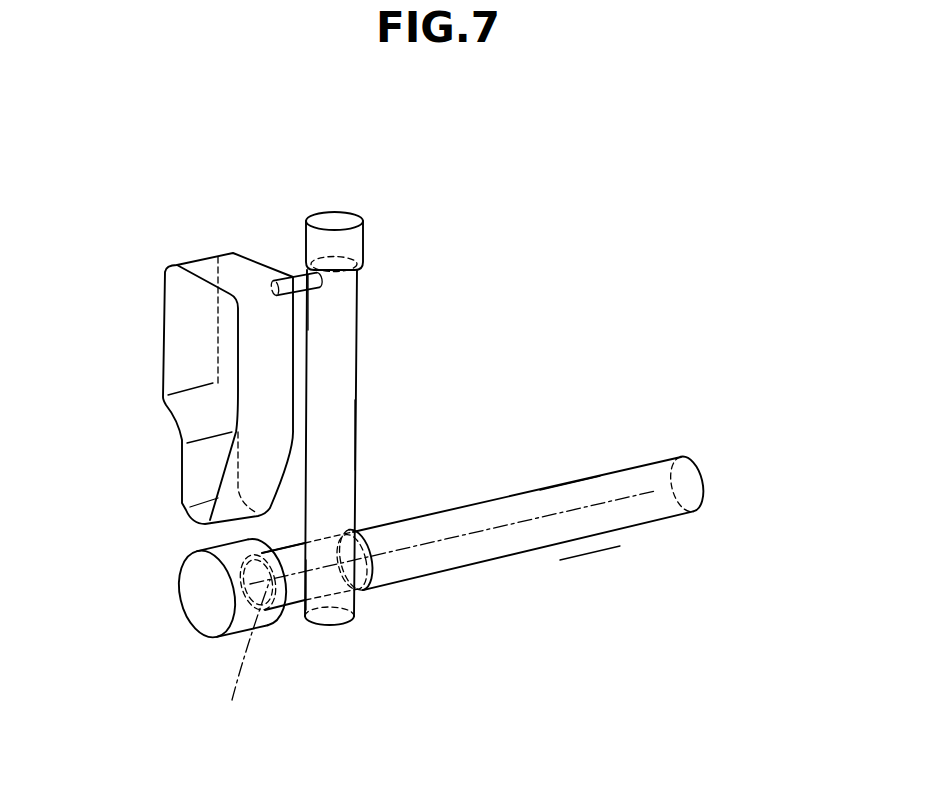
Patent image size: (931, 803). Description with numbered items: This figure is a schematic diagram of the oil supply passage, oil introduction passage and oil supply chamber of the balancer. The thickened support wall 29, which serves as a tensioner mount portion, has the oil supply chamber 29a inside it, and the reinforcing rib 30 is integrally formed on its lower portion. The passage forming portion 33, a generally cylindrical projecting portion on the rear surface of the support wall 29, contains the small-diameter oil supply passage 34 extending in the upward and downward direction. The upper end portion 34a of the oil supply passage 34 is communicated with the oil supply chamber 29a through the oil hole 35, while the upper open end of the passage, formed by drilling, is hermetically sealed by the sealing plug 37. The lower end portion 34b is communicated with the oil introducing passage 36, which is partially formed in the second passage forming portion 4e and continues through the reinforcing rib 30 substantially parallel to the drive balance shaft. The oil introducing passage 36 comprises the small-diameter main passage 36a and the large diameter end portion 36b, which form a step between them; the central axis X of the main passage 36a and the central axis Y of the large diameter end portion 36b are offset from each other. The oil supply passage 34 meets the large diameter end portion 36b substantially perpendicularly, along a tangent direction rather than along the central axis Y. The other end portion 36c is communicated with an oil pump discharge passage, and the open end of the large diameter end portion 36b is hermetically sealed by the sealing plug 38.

The support wall 29 is at (196, 252).
The oil supply chamber 29a is at (190, 368).
The reinforcing rib 30 is at (290, 543).
The passage forming portion 33 is at (353, 468).
The oil supply passage 34 is at (343, 395).
The upper end portion of oil supply passage 34a is at (342, 290).
The lower end portion of oil supply passage 34b is at (333, 600).
The oil hole 35 is at (308, 277).
The oil introducing passage 36 is at (537, 548).
The main passage 36a is at (627, 515).
The large diameter end portion 36b is at (293, 602).
The other end portion of oil introducing passage 36c is at (688, 485).
The sealing plug 37 is at (350, 242).
The sealing plug 38 is at (198, 607).
The second passage forming portion 4e is at (578, 478).
The central axis of main passage X is at (505, 523).
The central axis of large diameter end portion Y is at (247, 654).